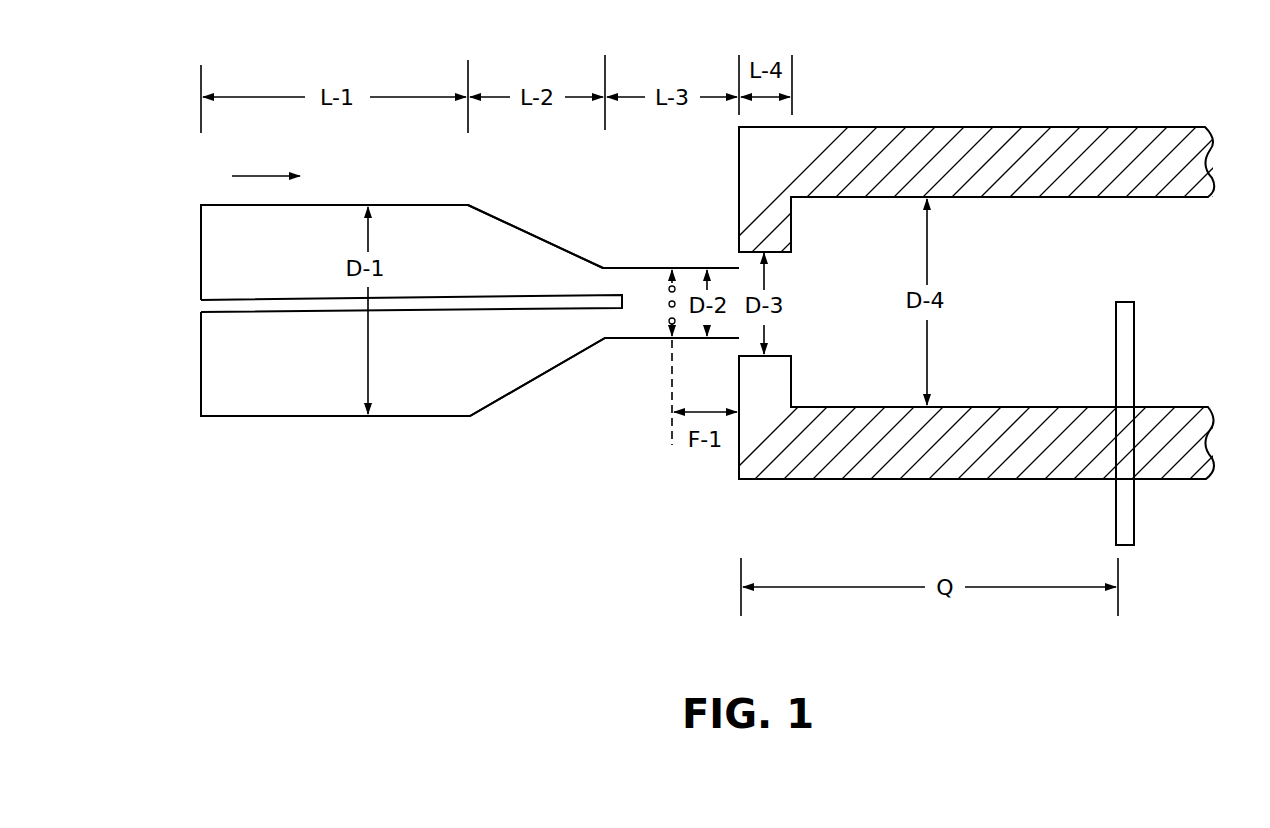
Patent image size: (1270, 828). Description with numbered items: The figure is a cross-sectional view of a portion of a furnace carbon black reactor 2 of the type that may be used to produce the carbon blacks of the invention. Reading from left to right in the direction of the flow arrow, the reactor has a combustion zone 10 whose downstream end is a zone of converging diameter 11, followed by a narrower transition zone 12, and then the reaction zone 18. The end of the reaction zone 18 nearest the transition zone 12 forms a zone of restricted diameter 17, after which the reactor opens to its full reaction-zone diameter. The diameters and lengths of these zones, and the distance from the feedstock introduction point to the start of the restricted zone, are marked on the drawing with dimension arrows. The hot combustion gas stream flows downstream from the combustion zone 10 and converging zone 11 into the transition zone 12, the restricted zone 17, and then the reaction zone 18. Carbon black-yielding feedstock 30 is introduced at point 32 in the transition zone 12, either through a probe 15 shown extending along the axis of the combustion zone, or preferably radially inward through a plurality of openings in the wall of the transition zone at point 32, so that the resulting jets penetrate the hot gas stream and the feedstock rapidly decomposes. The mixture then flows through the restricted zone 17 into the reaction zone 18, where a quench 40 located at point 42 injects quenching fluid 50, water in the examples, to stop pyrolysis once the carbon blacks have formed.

The furnace carbon black reactor 2 is at (925, 128).
The combustion zone 10 is at (293, 395).
The zone of converging diameter 11 is at (538, 347).
The transition zone 12 is at (610, 268).
The probe 15 is at (465, 312).
The zone of restricted diameter 17 is at (771, 257).
The reaction zone 18 is at (1003, 232).
The carbon black-yielding feedstock 30 is at (667, 280).
The feedstock introduction point 32 is at (668, 348).
The quench 40 is at (1135, 500).
The quench point 42 is at (1112, 482).
The quenching fluid 50 is at (1114, 302).